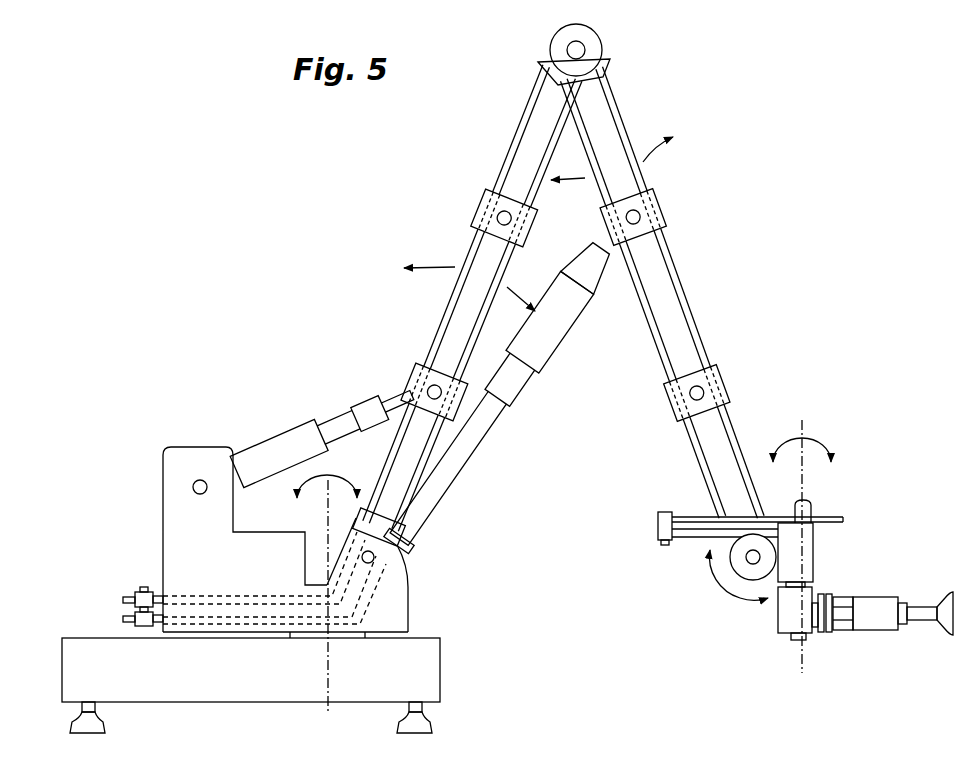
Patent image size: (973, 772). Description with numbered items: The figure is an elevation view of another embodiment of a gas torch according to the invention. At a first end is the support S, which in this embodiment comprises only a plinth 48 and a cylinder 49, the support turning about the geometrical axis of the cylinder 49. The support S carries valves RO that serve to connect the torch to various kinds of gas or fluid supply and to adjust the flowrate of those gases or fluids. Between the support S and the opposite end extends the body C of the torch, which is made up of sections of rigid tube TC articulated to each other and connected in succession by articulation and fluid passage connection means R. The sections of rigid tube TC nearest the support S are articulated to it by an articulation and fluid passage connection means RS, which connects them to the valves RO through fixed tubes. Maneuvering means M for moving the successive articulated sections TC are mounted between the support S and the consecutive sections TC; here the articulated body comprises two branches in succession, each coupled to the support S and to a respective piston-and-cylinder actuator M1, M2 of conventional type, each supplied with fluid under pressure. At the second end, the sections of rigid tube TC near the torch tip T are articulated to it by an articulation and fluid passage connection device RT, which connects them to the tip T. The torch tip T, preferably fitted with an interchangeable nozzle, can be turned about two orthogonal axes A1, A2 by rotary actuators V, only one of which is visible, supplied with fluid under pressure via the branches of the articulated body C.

The articulation and fluid passage connection means R is at (593, 38).
The body of the torch C is at (509, 119).
The sections of rigid tube TC is at (465, 252).
The support S is at (190, 432).
The maneuvering means M is at (419, 398).
The piston-and-cylinder actuator M1 is at (310, 428).
The piston-and-cylinder actuator M2 is at (537, 363).
The articulation and fluid passage connection means RS is at (398, 545).
The valves RO is at (138, 585).
The cylinder 49 is at (302, 638).
The plinth 48 is at (374, 690).
The axis A1 is at (748, 560).
The axis A2 is at (805, 474).
The articulation and fluid passage connection device RT is at (748, 573).
The rotary actuators V is at (800, 542).
The torch tip T is at (909, 586).